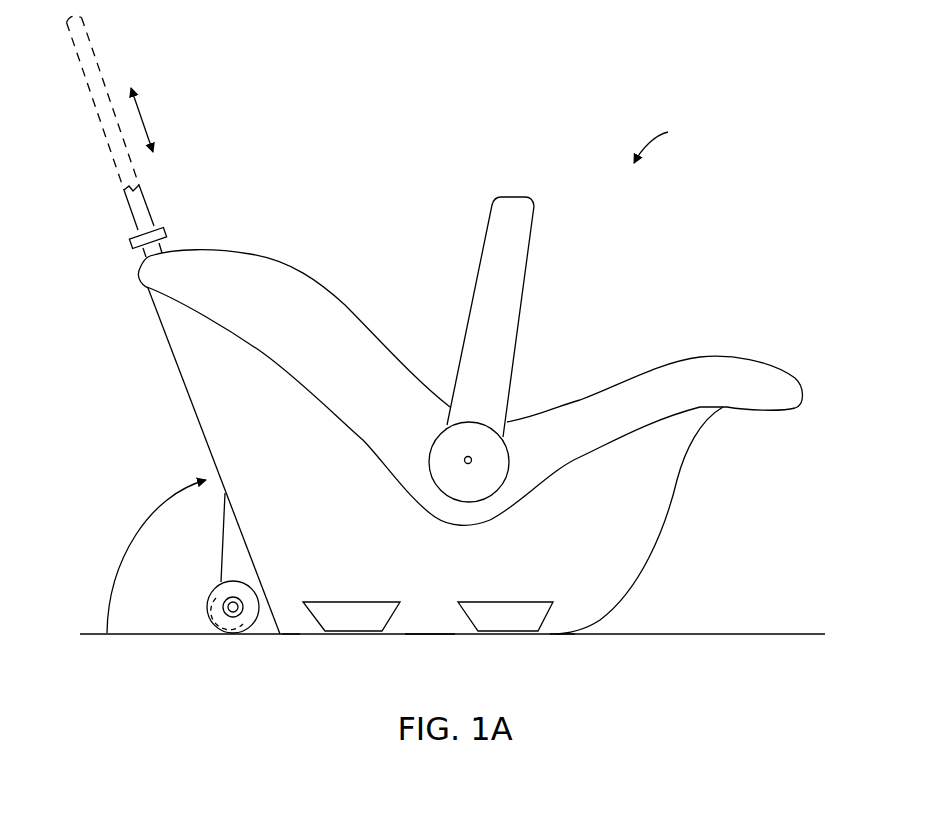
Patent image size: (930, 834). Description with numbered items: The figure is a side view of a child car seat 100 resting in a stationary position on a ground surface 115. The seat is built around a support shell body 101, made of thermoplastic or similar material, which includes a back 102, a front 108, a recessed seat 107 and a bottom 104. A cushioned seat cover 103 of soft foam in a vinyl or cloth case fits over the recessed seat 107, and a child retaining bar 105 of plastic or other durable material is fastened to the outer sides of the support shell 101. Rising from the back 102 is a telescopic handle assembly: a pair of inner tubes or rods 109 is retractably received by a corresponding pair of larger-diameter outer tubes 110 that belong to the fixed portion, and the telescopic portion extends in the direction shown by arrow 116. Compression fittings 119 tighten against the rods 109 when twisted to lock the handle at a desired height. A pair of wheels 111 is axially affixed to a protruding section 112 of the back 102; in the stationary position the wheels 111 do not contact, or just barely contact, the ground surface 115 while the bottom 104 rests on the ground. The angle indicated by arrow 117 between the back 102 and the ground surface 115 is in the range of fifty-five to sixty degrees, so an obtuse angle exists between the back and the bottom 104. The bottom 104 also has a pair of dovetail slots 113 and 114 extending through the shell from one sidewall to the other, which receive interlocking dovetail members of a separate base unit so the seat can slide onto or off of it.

The child car seat 100 is at (674, 141).
The support shell body 101 is at (566, 535).
The back 102 is at (192, 400).
The cushioned seat cover 103 is at (625, 372).
The bottom 104 is at (288, 630).
The child retaining bar 105 is at (527, 272).
The recessed seat 107 is at (577, 457).
The front 108 is at (638, 580).
The inner tubes or rods 109 is at (98, 65).
The outer tubes 110 is at (168, 247).
The wheels 111 is at (207, 607).
The protruding section 112 is at (222, 550).
The dovetail slot 113 is at (334, 628).
The dovetail slot 114 is at (491, 628).
The ground surface 115 is at (798, 634).
The arrow 116 is at (143, 117).
The arrow 117 is at (135, 540).
The compression fittings 119 is at (130, 243).